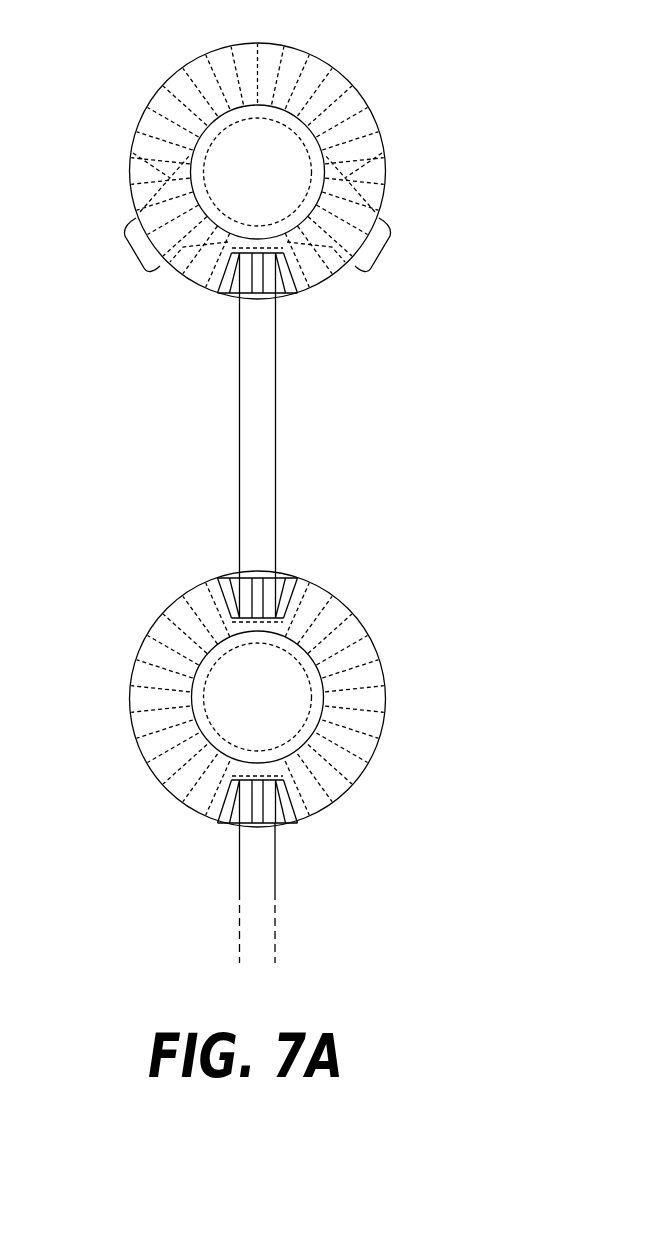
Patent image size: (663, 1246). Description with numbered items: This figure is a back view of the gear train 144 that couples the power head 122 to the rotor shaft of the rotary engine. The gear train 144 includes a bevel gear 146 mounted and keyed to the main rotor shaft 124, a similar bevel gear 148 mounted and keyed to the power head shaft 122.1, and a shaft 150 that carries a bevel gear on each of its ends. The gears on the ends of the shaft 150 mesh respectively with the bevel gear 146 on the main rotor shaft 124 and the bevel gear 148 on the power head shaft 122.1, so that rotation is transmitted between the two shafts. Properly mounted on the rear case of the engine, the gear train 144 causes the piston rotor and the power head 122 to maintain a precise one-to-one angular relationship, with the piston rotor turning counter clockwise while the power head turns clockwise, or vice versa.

The power head 122 is at (265, 171).
The power head shaft 122.1 is at (340, 123).
The bevel gear 148 is at (313, 270).
The shaft 150 is at (245, 367).
The gear train 144 is at (243, 608).
The bevel gear 146 is at (340, 625).
The main rotor shaft 124 is at (320, 673).